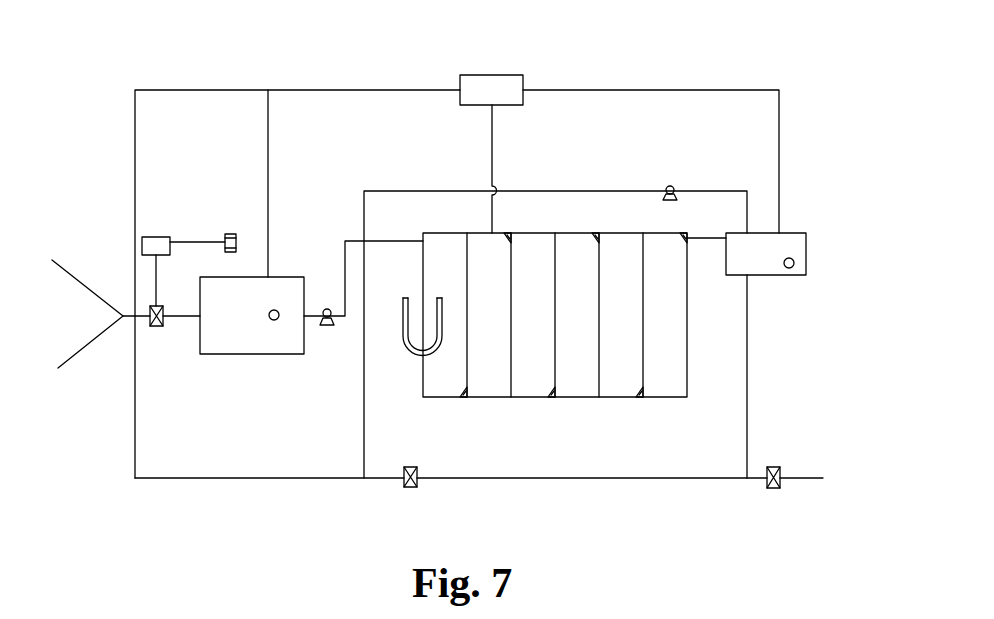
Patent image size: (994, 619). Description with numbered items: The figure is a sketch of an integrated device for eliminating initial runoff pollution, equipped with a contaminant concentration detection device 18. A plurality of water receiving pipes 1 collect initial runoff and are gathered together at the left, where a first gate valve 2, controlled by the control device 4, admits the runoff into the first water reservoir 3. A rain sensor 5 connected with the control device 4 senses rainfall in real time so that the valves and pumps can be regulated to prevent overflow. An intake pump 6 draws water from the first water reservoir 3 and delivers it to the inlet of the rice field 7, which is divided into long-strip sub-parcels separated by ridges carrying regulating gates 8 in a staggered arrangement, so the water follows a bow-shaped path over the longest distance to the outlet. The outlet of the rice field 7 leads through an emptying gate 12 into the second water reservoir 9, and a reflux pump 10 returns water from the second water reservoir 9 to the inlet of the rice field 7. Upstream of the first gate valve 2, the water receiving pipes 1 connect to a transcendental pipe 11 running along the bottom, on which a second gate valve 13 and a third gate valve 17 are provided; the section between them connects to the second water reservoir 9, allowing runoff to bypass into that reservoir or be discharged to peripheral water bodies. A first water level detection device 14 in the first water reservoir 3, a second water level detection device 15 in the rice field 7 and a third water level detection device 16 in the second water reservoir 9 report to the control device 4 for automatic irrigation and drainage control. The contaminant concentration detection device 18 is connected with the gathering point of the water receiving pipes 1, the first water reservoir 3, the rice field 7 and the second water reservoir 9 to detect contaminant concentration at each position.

The water receiving pipe 1 is at (63, 268).
The first gate valve 2 is at (157, 327).
The first water reservoir 3 is at (235, 354).
The control device 4 is at (150, 237).
The rain sensor 5 is at (232, 233).
The intake pump 6 is at (329, 325).
The rice field 7 is at (494, 398).
The regulating gate 8 is at (642, 400).
The second water reservoir 9 is at (783, 233).
The reflux pump 10 is at (672, 187).
The transcendental pipe 11 is at (690, 478).
The emptying gate 12 is at (686, 237).
The second gate valve 13 is at (417, 468).
The first water level detection device 14 is at (275, 310).
The second water level detection device 15 is at (418, 353).
The third water level detection device 16 is at (792, 259).
The third gate valve 17 is at (777, 467).
The contaminant concentration detection device 18 is at (493, 74).